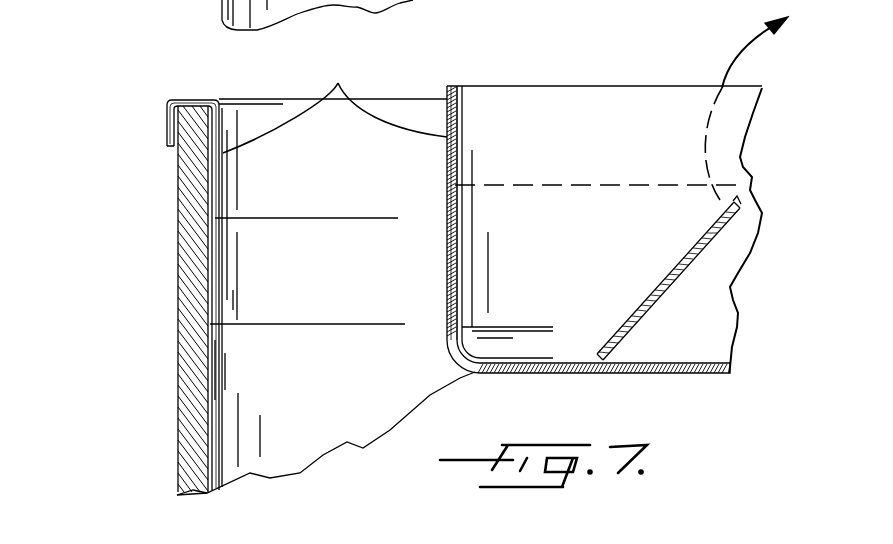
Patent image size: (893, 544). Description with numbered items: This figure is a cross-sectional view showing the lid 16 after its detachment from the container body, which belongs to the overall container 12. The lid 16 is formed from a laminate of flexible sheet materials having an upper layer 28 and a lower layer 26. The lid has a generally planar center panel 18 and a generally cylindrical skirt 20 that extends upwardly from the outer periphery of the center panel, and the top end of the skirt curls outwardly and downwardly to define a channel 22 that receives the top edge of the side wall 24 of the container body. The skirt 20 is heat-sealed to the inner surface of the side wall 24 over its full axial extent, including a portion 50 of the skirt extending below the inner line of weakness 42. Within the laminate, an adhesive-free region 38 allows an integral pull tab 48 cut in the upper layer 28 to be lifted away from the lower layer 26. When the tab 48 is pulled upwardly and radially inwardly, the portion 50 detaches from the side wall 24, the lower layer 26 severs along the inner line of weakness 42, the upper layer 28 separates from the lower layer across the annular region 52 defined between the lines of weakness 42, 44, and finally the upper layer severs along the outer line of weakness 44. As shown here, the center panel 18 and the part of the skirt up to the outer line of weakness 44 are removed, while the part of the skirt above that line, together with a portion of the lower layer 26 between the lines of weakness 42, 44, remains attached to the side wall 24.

The panel assembly 12 is at (165, 365).
The lid 16 is at (589, 88).
The center panel 18 is at (540, 362).
The skirt 20 is at (220, 124).
The channel 22 is at (193, 108).
The side wall 24 is at (183, 240).
The lower layer 26 is at (217, 303).
The upper layer 28 is at (338, 83).
The adhesive-free region 38 is at (690, 362).
The inner line of weakness 42 is at (302, 307).
The outer line of weakness 44 is at (392, 146).
The pull tab 48 is at (687, 260).
The portion of the skirt 50 is at (442, 186).
The annular region 52 is at (235, 219).